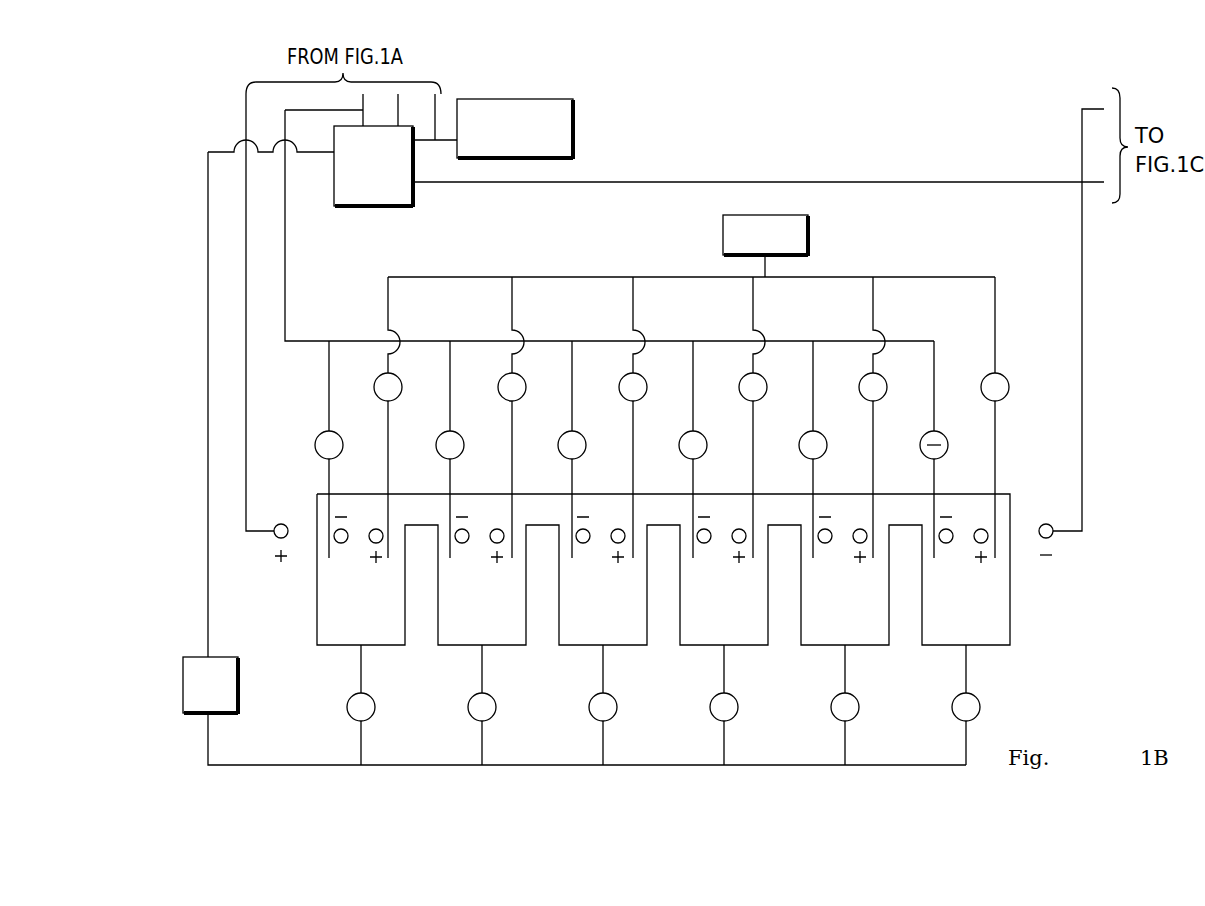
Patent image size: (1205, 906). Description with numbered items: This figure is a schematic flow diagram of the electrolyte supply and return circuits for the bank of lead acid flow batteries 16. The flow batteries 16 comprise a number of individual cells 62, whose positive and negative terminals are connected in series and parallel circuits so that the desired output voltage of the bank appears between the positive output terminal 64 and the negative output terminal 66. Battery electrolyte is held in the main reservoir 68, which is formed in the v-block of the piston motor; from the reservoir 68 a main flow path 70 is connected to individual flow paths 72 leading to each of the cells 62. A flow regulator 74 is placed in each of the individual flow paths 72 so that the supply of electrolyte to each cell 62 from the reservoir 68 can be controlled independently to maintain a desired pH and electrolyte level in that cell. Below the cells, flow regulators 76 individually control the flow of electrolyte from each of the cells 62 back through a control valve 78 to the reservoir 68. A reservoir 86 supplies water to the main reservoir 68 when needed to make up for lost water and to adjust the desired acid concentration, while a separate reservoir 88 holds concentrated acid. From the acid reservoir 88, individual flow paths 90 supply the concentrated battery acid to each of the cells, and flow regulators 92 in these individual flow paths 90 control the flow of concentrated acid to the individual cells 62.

The lead acid flow batteries 16 is at (1040, 603).
The cell 62 is at (380, 636).
The positive output terminal 64 is at (246, 495).
The negative output terminal 66 is at (1082, 481).
The main reservoir 68 is at (342, 181).
The main flow path 70 is at (286, 292).
The individual flow paths 72 is at (329, 388).
The flow regulator 74 is at (362, 437).
The flow regulators 76 is at (375, 708).
The control valve 78 is at (220, 656).
The reservoir 86 is at (573, 130).
The reservoir 88 is at (808, 236).
The individual flow paths 90 is at (388, 308).
The flow regulators 92 is at (401, 383).